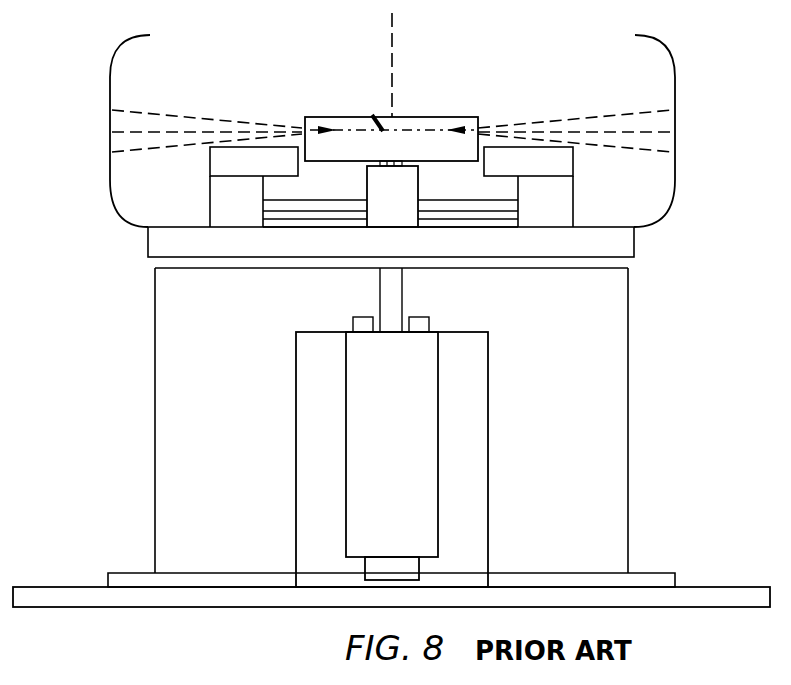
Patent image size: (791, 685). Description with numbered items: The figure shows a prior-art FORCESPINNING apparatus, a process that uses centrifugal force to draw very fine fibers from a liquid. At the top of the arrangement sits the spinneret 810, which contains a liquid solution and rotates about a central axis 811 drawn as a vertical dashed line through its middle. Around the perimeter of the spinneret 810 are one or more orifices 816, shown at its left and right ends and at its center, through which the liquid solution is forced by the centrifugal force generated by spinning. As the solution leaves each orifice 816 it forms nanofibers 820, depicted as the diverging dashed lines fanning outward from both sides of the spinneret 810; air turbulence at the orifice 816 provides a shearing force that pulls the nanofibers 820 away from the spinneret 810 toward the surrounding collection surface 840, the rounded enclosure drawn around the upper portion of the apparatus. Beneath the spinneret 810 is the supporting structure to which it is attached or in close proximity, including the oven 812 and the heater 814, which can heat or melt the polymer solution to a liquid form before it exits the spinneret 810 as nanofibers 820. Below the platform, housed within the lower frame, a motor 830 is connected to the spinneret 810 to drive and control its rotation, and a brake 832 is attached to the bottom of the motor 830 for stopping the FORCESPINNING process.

The spinneret 810 is at (452, 95).
The central axis 811 is at (390, 40).
The oven 812 is at (467, 184).
The heater 814 is at (537, 211).
The orifice 816 is at (373, 115).
The nanofibers 820 is at (165, 114).
The motor 830 is at (325, 431).
The brake 832 is at (336, 566).
The collection surface 840 is at (112, 214).